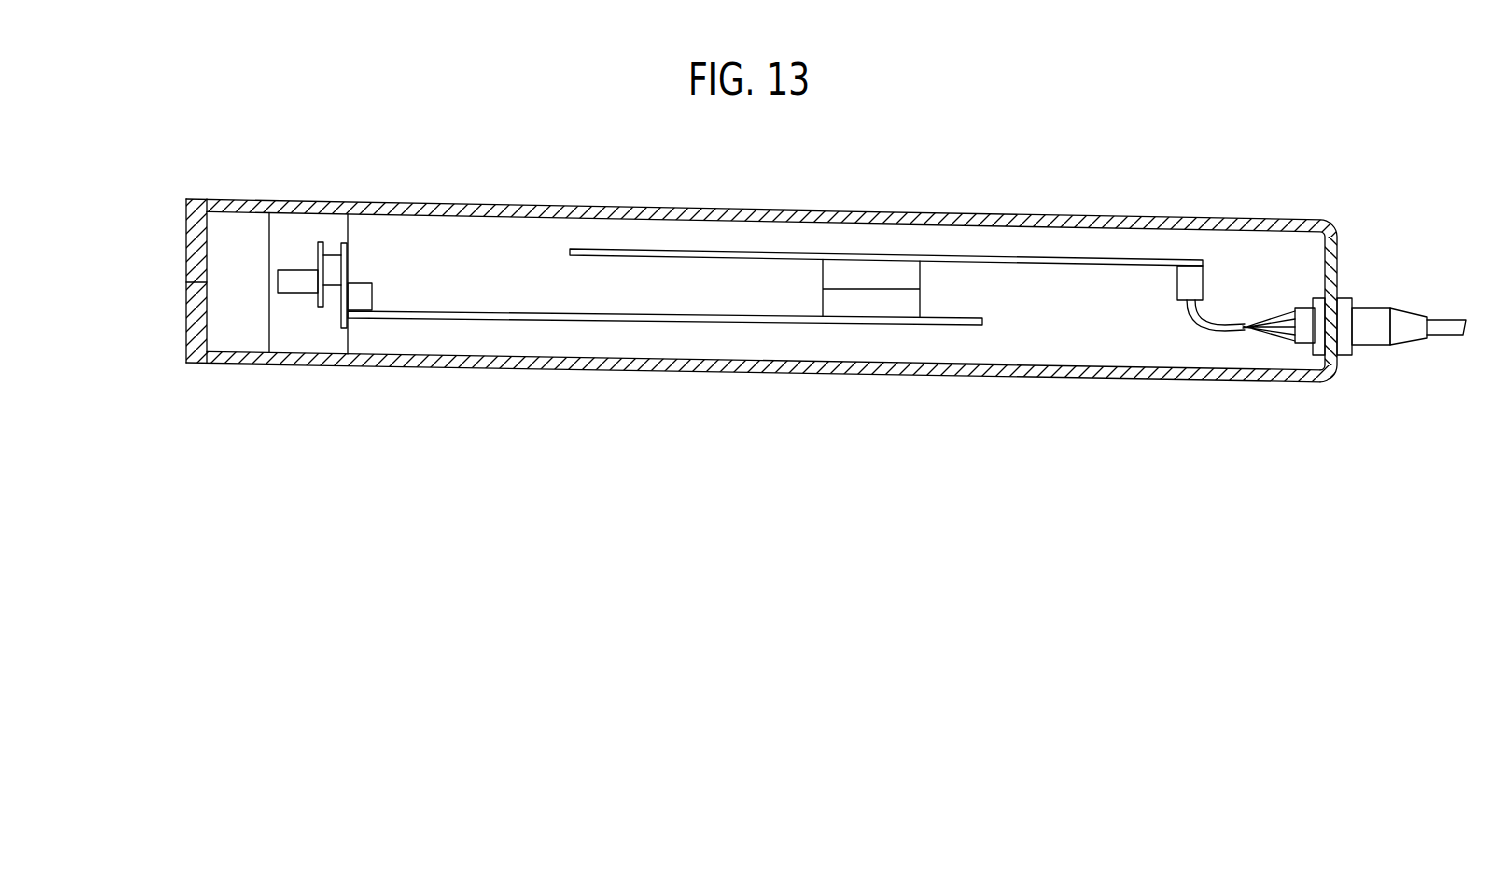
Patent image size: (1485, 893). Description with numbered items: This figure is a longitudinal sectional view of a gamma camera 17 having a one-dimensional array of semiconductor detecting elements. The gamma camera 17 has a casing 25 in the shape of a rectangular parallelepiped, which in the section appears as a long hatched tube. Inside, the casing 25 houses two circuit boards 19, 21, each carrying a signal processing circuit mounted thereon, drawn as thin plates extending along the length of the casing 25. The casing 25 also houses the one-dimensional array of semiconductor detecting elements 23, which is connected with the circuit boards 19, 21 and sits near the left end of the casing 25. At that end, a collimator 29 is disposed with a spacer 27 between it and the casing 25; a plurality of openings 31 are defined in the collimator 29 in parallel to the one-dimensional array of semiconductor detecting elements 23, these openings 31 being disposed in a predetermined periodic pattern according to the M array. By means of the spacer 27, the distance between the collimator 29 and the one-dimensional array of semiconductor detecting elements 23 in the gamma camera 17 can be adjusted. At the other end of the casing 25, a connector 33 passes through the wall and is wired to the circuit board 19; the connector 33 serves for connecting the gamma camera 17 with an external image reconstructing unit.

The gamma camera 17 is at (982, 188).
The circuit board 19 is at (1148, 262).
The circuit board 21 is at (660, 318).
The one-dimensional array of semiconductor detecting elements 23 is at (295, 277).
The casing 25 is at (775, 215).
The spacer 27 is at (233, 363).
The collimator 29 is at (192, 363).
The openings 31 is at (188, 282).
The connector 33 is at (1370, 338).